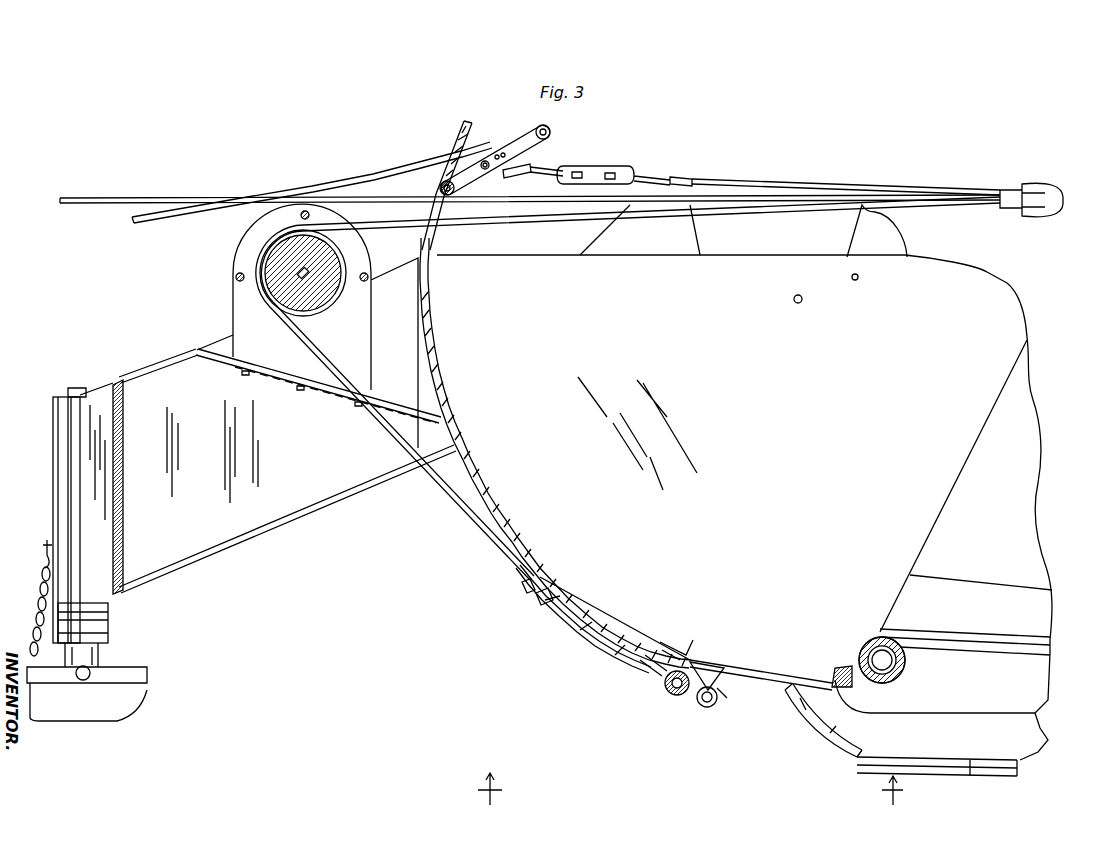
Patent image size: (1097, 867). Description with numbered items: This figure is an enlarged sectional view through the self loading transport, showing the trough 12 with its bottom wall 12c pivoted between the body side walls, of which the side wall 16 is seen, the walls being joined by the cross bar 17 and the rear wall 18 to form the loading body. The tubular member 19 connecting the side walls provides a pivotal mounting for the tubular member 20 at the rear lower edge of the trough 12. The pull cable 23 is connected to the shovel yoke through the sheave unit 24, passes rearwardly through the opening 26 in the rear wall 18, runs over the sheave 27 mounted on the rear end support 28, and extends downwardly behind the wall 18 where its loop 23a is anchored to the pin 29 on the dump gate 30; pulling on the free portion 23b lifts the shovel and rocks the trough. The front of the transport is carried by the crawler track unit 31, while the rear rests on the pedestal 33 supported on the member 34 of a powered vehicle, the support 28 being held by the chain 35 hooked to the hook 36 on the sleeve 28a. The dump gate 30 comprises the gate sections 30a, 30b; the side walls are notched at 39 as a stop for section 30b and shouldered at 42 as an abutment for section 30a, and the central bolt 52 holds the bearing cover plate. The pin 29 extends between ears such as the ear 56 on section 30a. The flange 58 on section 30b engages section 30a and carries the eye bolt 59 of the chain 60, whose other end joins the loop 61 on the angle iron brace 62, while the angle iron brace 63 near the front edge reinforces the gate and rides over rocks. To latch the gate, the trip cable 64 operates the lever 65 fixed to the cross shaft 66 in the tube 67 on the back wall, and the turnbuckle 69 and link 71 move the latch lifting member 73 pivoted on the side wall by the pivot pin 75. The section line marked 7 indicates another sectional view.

The section line 7- 7 is at (690, 797).
The trough 12 is at (960, 495).
The bottom wall 12c is at (1008, 628).
The side wall 16 is at (826, 432).
The cross bar 17 is at (846, 697).
The rear wall 18 is at (468, 125).
The tubular member 19 is at (898, 676).
The tubular member 20 is at (908, 664).
The pull cable 23 is at (930, 196).
The loop 23a is at (678, 695).
The free portion 23b is at (88, 197).
The sheave unit 24 is at (1045, 186).
The opening 26 is at (432, 300).
The sheave 27 is at (245, 266).
The rear end support 28 is at (140, 370).
The sleeve 28a is at (52, 450).
The pin 29 is at (698, 702).
The dump gate 30 is at (761, 703).
The gate section 30a is at (786, 672).
The gate section 30b is at (645, 625).
The crawler track unit 31 is at (995, 765).
The pedestal 33 is at (112, 656).
The member 34 is at (125, 712).
The chain 35 is at (40, 598).
The hook 36 is at (42, 545).
The notch 39 is at (695, 648).
The shoulder 42 is at (840, 668).
The central bolt 52 is at (800, 303).
The ear 56 is at (665, 688).
The flange 58 is at (527, 598).
The eye bolt 59 is at (550, 606).
The chain 60 is at (616, 645).
The loop 61 is at (718, 704).
The angle iron brace 62 is at (712, 668).
The angle iron brace 63 is at (810, 706).
The trip cable 64 is at (400, 172).
The lever 65 is at (540, 144).
The cross shaft 66 is at (449, 196).
The tube 67 is at (440, 188).
The turnbuckle 69 is at (625, 166).
The link 71 is at (762, 180).
The latch lifting member 73 is at (898, 244).
The pivot pin 75 is at (858, 280).